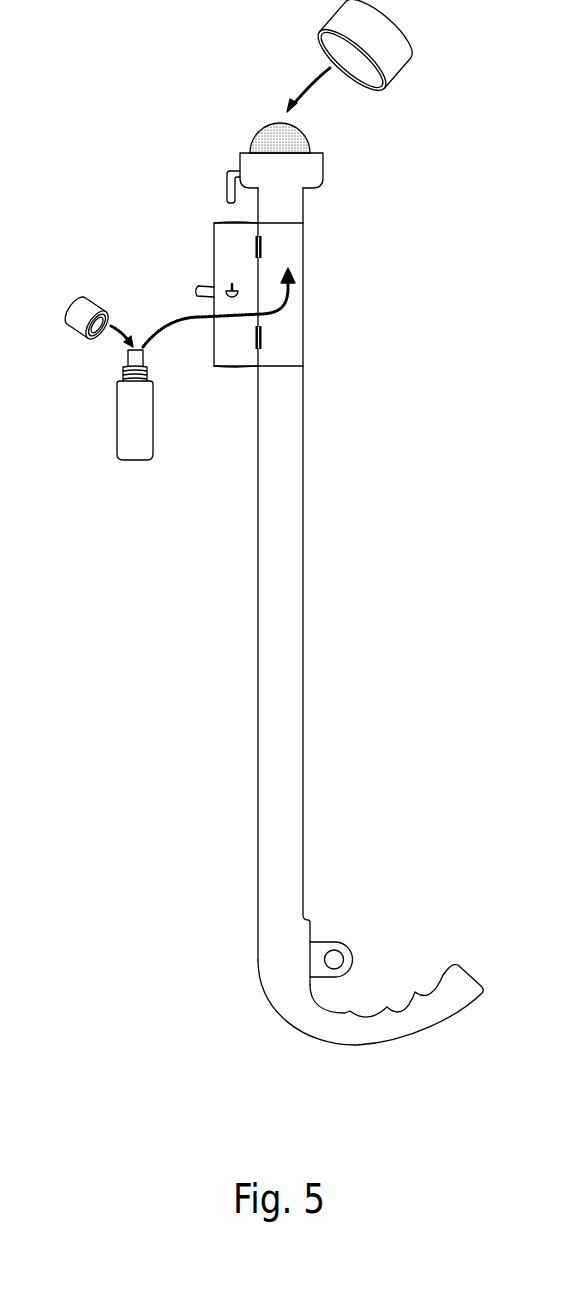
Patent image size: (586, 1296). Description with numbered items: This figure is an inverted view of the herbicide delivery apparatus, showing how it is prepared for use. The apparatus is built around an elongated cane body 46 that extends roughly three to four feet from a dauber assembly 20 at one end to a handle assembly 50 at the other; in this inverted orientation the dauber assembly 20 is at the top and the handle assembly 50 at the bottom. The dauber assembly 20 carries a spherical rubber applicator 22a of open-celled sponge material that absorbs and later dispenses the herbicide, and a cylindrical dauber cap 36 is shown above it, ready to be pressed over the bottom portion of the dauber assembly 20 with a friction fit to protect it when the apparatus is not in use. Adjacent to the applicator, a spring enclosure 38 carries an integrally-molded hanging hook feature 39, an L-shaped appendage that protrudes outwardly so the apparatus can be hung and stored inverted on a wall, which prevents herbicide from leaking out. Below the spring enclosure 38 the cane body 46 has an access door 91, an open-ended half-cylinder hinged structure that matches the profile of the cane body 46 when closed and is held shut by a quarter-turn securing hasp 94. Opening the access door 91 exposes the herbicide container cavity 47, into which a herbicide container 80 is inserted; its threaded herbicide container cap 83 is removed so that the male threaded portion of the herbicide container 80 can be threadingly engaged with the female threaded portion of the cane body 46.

The dauber assembly 20 is at (275, 148).
The spherical rubber applicator 22a is at (265, 135).
The dauber cap 36 is at (392, 53).
The spring enclosure 38 is at (240, 160).
The hanging hook feature 39 is at (225, 190).
The cane body 46 is at (269, 542).
The herbicide container cavity 47 is at (288, 235).
The handle assembly 50 is at (303, 1015).
The herbicide container 80 is at (128, 402).
The herbicide container cap 83 is at (85, 313).
The access door 91 is at (236, 369).
The quarter-turn securing hasp 94 is at (197, 287).